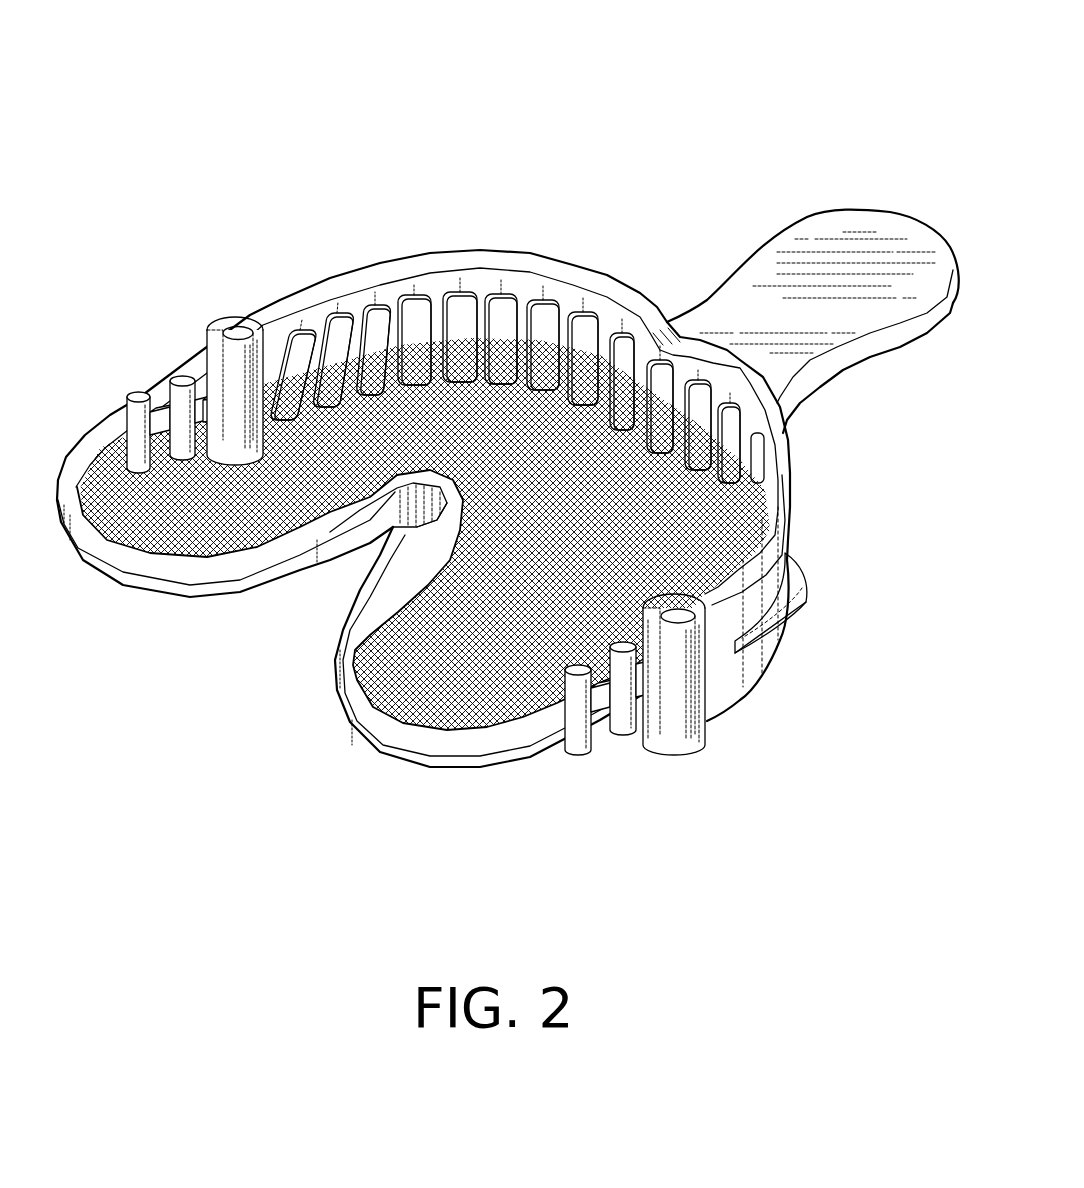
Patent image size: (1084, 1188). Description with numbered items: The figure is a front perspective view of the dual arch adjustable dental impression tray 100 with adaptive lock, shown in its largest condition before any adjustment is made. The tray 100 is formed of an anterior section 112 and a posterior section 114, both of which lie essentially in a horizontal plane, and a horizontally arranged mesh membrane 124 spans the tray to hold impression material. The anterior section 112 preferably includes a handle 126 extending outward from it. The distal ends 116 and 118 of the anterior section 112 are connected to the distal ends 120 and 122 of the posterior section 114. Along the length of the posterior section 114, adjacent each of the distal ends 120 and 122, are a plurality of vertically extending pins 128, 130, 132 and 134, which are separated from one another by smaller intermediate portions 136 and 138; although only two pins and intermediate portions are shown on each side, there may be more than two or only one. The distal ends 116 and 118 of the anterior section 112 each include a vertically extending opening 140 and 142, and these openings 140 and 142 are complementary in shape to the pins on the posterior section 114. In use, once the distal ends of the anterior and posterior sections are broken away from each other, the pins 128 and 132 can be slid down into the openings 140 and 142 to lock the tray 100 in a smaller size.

The adjustable dental impression tray 100 is at (501, 476).
The anterior section 112 is at (508, 509).
The posterior section 114 is at (157, 573).
The distal end of anterior section 116 is at (203, 333).
The distal end of anterior section 118 is at (752, 737).
The distal end of posterior section 120 is at (207, 393).
The distal end of posterior section 122 is at (657, 690).
The mesh membrane 124 is at (453, 687).
The handle 126 is at (738, 305).
The pin 128 is at (183, 380).
The pin 130 is at (137, 397).
The pin 132 is at (620, 720).
The pin 134 is at (573, 743).
The intermediate portion 136 is at (170, 407).
The intermediate portion 138 is at (607, 723).
The opening 140 is at (237, 330).
The opening 142 is at (677, 623).